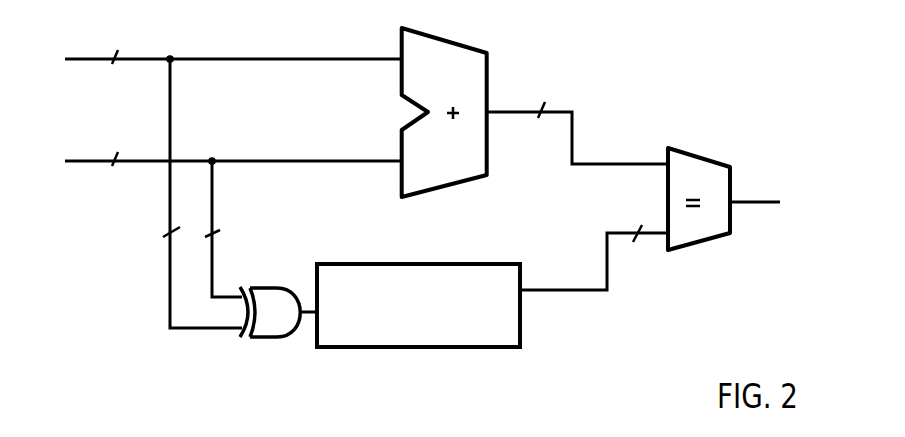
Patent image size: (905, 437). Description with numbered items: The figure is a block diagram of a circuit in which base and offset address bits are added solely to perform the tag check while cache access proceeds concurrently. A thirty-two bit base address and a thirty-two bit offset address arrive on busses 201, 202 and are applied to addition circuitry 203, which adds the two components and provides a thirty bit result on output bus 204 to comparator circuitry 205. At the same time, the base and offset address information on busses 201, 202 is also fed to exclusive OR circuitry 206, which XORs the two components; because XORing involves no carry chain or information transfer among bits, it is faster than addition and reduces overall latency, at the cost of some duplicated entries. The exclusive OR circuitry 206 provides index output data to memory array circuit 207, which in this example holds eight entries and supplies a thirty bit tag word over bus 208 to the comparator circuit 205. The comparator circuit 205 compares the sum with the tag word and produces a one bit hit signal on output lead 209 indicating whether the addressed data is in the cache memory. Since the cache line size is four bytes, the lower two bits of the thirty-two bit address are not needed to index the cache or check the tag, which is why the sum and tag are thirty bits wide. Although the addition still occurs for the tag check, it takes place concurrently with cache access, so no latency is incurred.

The bus 201 is at (77, 55).
The bus 202 is at (77, 157).
The addition circuitry 203 is at (440, 43).
The output bus 204 is at (572, 108).
The comparator circuitry 205 is at (703, 163).
The exclusive OR circuitry 206 is at (270, 328).
The memory array circuit 207 is at (455, 263).
The bus 208 is at (577, 295).
The output lead 209 is at (752, 205).